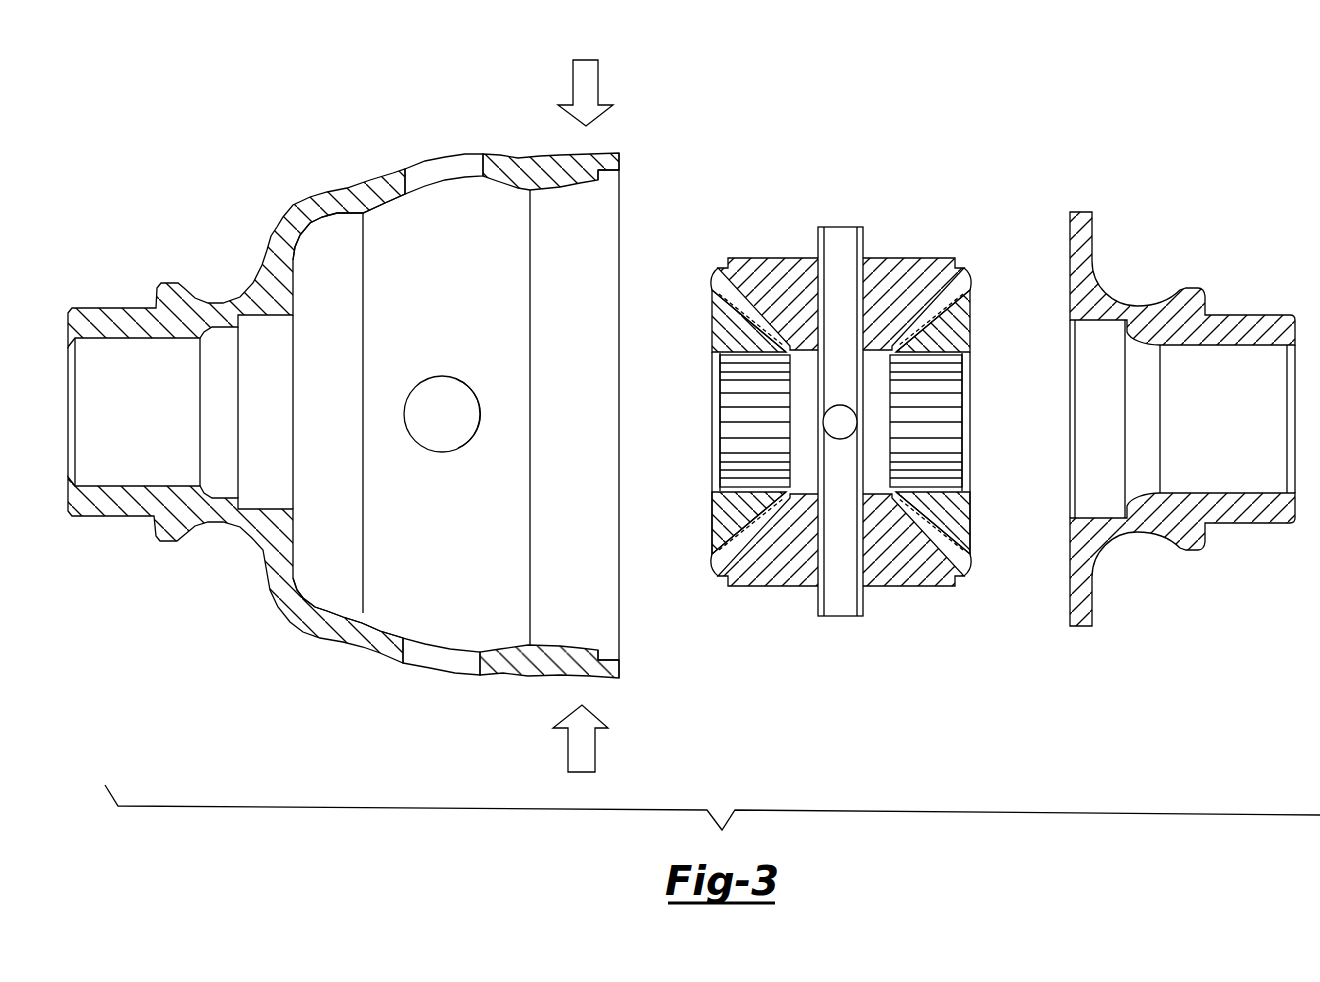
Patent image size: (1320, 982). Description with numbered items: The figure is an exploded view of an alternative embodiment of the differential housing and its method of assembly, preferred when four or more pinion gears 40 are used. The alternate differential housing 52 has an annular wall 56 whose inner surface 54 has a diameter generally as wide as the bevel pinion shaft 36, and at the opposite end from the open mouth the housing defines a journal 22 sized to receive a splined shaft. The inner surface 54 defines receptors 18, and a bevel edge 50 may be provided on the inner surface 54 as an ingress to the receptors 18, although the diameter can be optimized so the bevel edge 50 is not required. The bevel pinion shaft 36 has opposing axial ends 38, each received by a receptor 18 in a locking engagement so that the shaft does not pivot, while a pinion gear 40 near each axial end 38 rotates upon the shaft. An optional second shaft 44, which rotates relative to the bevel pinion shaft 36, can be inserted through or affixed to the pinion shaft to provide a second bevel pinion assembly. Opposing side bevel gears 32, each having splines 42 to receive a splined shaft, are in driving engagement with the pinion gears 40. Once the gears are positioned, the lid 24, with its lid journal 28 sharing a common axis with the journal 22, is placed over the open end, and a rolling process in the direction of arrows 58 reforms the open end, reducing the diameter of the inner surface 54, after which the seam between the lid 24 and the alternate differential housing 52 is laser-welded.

The receptor 18 is at (456, 403).
The journal 22 is at (108, 518).
The lid 24 is at (1182, 415).
The lid journal 28 is at (1260, 314).
The side bevel gear 32 is at (958, 330).
The bevel pinion shaft 36 is at (841, 417).
The opposing axial end 38 is at (838, 227).
The pinion gear 40 is at (907, 268).
The splines 42 is at (738, 433).
The second shaft 44 is at (842, 406).
The bevel edge 50 is at (381, 206).
The alternate differential housing 52 is at (516, 152).
The inner surface 54 is at (570, 190).
The annular wall 56 is at (538, 671).
The arrows 58 is at (592, 77).